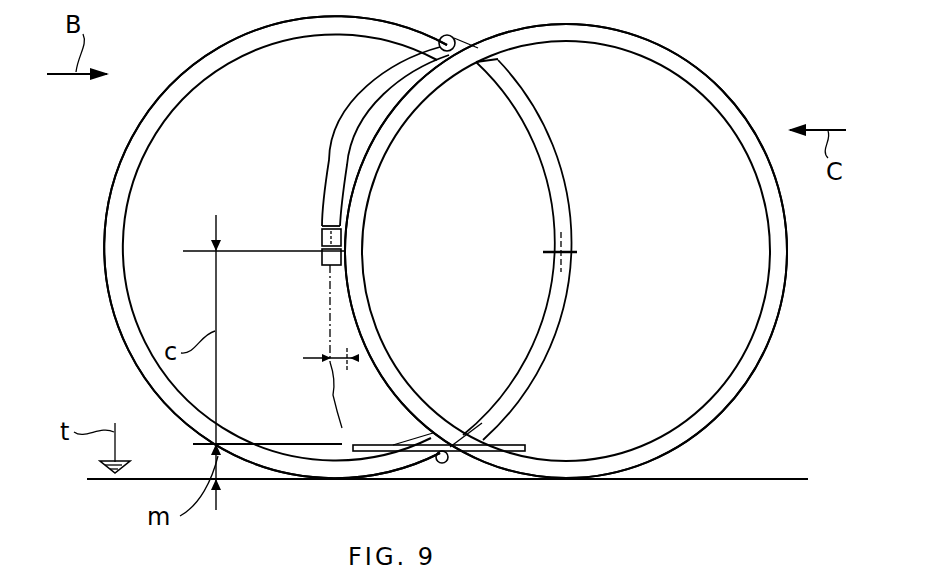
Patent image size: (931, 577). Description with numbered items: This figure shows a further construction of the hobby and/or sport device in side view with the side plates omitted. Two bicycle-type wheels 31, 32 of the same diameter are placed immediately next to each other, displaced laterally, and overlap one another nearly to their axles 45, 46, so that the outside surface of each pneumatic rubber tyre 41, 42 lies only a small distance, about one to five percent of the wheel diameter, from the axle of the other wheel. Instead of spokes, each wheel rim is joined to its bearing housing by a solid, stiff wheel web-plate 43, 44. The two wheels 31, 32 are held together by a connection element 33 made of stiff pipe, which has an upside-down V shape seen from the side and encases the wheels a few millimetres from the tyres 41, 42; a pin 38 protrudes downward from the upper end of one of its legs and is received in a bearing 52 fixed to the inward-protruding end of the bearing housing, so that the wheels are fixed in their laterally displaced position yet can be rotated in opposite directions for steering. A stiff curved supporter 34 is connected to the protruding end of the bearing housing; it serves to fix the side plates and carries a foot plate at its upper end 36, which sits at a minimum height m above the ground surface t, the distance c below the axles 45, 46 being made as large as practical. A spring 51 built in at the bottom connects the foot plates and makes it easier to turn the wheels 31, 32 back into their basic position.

The wheel 31 is at (124, 153).
The wheel 32 is at (752, 126).
The connection element 33 is at (355, 117).
The curved supporter 34 is at (543, 108).
The foot plate 36 is at (522, 447).
The pin 38 is at (330, 298).
The tyre 41 is at (217, 63).
The tyre 42 is at (702, 82).
The wheel web-plate 43 is at (235, 146).
The wheel web-plate 44 is at (688, 141).
The axle 45 is at (318, 247).
The axle 46 is at (572, 250).
The spring 51 is at (437, 463).
The bearing 52 is at (320, 265).